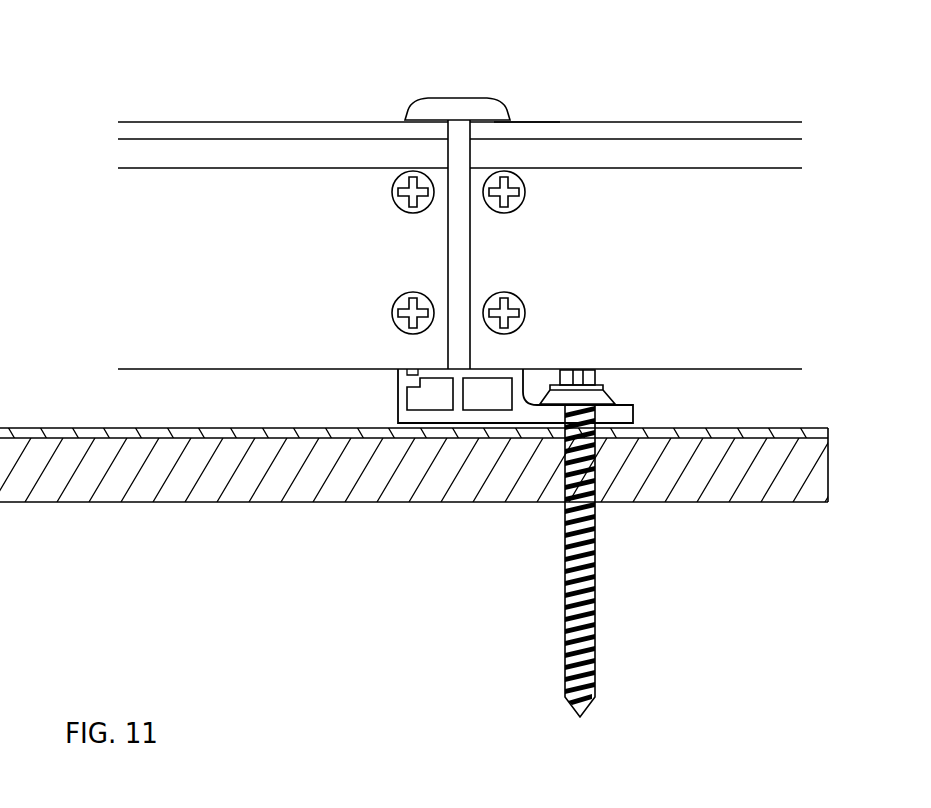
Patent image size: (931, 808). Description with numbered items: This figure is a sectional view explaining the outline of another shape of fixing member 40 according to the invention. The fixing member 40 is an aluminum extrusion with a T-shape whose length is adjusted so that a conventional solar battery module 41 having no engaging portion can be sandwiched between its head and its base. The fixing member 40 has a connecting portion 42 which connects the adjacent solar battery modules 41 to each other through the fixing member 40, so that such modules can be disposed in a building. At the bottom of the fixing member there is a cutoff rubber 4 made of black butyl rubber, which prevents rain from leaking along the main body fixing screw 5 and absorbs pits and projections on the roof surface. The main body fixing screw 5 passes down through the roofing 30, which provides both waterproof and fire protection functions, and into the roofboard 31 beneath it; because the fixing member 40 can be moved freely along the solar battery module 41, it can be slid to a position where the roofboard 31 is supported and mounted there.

The solar battery module 41 is at (288, 152).
The fixing member 40 is at (452, 108).
The connecting portion 42 is at (494, 122).
The roofing 30 is at (65, 430).
The roofboard 31 is at (93, 480).
The cutoff rubber 4 is at (435, 427).
The main body fixing screw 5 is at (583, 380).